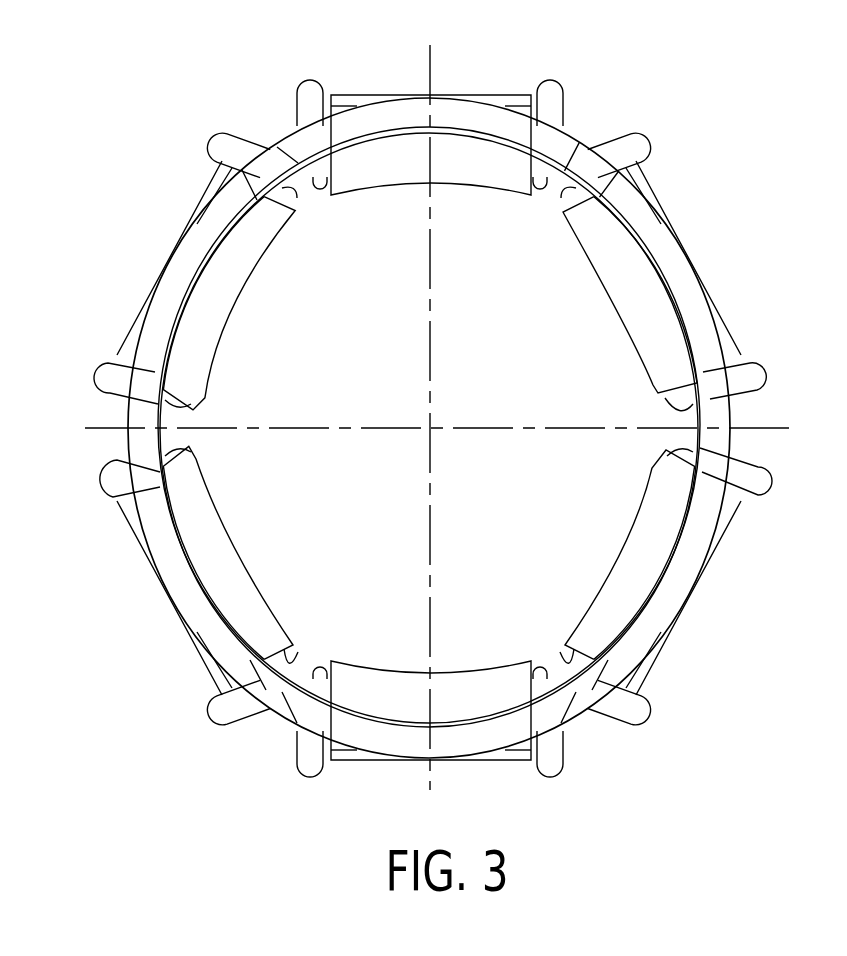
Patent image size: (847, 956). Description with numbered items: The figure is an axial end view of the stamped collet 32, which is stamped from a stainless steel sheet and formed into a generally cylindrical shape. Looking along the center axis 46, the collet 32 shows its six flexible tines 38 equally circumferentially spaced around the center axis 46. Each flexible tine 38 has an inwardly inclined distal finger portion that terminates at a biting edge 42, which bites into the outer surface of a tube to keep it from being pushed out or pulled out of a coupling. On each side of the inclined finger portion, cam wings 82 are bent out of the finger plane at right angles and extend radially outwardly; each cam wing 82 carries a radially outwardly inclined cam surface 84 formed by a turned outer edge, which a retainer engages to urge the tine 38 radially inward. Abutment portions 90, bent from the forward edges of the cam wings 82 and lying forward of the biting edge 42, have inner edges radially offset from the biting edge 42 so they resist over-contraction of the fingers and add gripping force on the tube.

The stamped collet 32 is at (651, 106).
The flexible tine 38 is at (644, 458).
The biting edge 42 is at (258, 272).
The center axis 46 is at (430, 430).
The cam wing 82 is at (760, 472).
The cam surface 84 is at (750, 480).
The abutment portion 90 is at (357, 95).